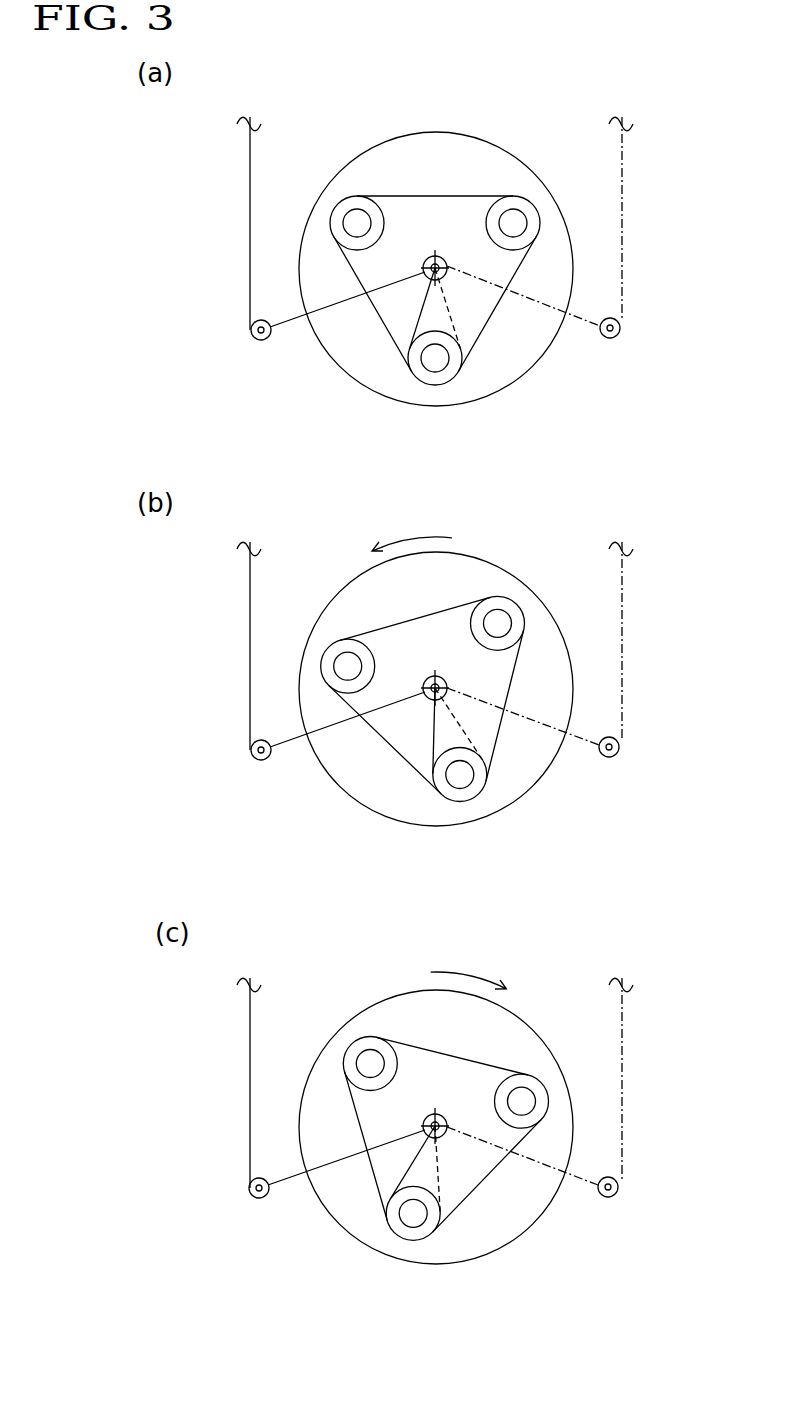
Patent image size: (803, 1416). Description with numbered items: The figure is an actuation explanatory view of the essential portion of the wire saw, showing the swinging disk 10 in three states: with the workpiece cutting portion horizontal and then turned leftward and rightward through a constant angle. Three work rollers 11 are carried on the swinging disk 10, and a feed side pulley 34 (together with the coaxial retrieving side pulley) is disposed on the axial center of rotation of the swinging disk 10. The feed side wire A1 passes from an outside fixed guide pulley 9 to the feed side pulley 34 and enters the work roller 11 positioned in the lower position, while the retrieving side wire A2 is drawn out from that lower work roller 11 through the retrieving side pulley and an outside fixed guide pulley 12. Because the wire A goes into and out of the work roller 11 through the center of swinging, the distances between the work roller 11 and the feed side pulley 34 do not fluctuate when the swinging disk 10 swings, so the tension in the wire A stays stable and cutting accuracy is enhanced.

The outside fixed guide pulley 9 is at (250, 333).
The swinging disk 10 is at (380, 160).
The work rollers 11 is at (380, 220).
The outside fixed guide pulley 12 is at (620, 328).
The feed side pulley 34 is at (428, 276).
The wire A is at (240, 176).
The feed side wire A1 is at (250, 245).
The retrieving side wire A2 is at (573, 320).